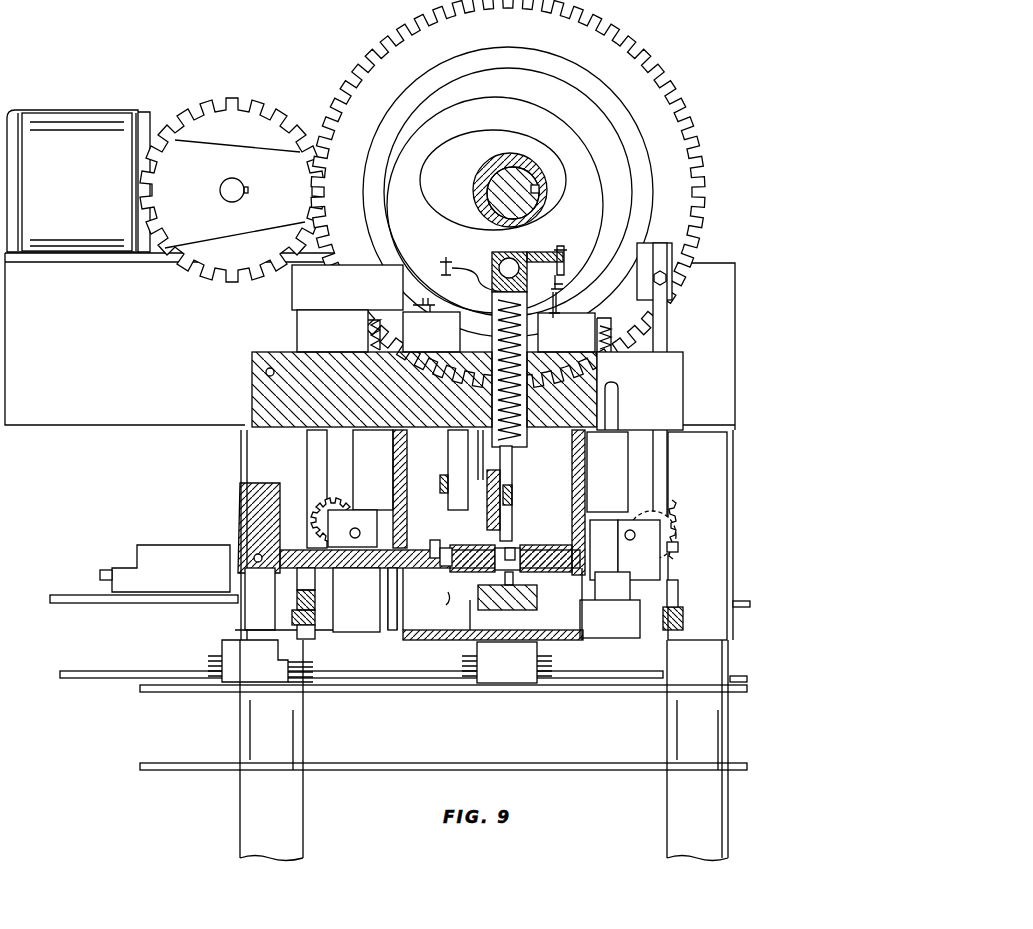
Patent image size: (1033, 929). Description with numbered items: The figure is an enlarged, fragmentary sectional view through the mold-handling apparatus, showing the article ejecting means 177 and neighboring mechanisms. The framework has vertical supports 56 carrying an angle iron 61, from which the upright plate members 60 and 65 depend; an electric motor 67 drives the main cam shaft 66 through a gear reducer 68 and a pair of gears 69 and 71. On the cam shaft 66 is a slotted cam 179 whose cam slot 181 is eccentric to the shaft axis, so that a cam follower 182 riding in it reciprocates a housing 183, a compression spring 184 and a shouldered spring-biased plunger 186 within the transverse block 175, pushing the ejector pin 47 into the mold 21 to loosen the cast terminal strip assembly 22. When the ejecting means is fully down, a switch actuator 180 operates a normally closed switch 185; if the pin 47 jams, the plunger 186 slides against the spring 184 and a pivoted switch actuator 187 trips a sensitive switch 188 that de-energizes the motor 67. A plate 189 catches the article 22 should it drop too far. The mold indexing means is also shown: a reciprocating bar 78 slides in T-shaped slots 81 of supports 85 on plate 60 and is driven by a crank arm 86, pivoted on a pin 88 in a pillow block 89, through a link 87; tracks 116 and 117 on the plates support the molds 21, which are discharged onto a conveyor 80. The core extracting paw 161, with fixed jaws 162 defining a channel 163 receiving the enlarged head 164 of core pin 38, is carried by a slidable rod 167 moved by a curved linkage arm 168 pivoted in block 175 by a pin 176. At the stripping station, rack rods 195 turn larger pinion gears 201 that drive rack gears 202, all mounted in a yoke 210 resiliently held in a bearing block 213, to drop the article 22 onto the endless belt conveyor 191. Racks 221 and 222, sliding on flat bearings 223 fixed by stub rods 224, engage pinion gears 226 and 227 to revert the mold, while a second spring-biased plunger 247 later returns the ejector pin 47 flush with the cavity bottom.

The gear 69 is at (612, 36).
The electric motor 67 is at (100, 115).
The gear reducer 68 is at (155, 125).
The gear 71 is at (248, 113).
The slotted cam 179 is at (620, 172).
The cam slot 181 is at (560, 126).
The main cam shaft 66 is at (490, 189).
The cam follower 182 is at (492, 266).
The switch actuator 180 is at (555, 260).
The article ejecting means 177 is at (545, 283).
The switch actuator 187 is at (447, 267).
The compression spring 184 is at (525, 329).
The housing 183 is at (525, 345).
The normally closed switch 185 is at (598, 322).
The pillow block 89 is at (292, 297).
The crank arm 86 is at (405, 282).
The sensitive switch 188 is at (413, 316).
The pin 88 is at (431, 325).
The rack rods 195 is at (667, 320).
The transverse block 175 is at (290, 360).
The pin 176 is at (266, 371).
The plate member 65 is at (572, 444).
The curved linkage arm 168 is at (240, 498).
The bearing block 213 is at (383, 445).
The larger pinion gear 201 is at (355, 486).
The yoke 210 is at (318, 529).
The elongated channel 163 is at (395, 561).
The rack gear 202 is at (318, 592).
The slidable rod 167 is at (285, 565).
The pinion gear 227 is at (297, 595).
The rack 222 is at (292, 613).
The flat bearing 223 is at (315, 630).
The rack 221 is at (680, 600).
The pinion gear 226 is at (680, 547).
The support 85 is at (412, 470).
The link 87 is at (482, 470).
The T-shaped slot 81 is at (506, 470).
The spring-biased plunger 186 is at (514, 478).
The reciprocating bar 78 is at (514, 493).
The plate member 60 is at (400, 487).
The enlarged head portion 164 is at (400, 545).
The fixed jaw 162 is at (440, 555).
The spring-biased plunger 247 is at (513, 545).
The mold 21 is at (182, 539).
The conveyor 80 is at (85, 586).
The ejector pin 47 is at (513, 580).
The terminal strip assembly 22 is at (480, 610).
The core extracting and inserting paw 161 is at (485, 604).
The track 116 is at (388, 600).
The core pin 38 is at (424, 574).
The track 117 is at (598, 556).
The endless belt conveyor 191 is at (192, 676).
The stub rod 224 is at (240, 640).
The plate 189 is at (555, 648).
The vertical support 56 is at (240, 796).
The angle iron 61 is at (108, 425).